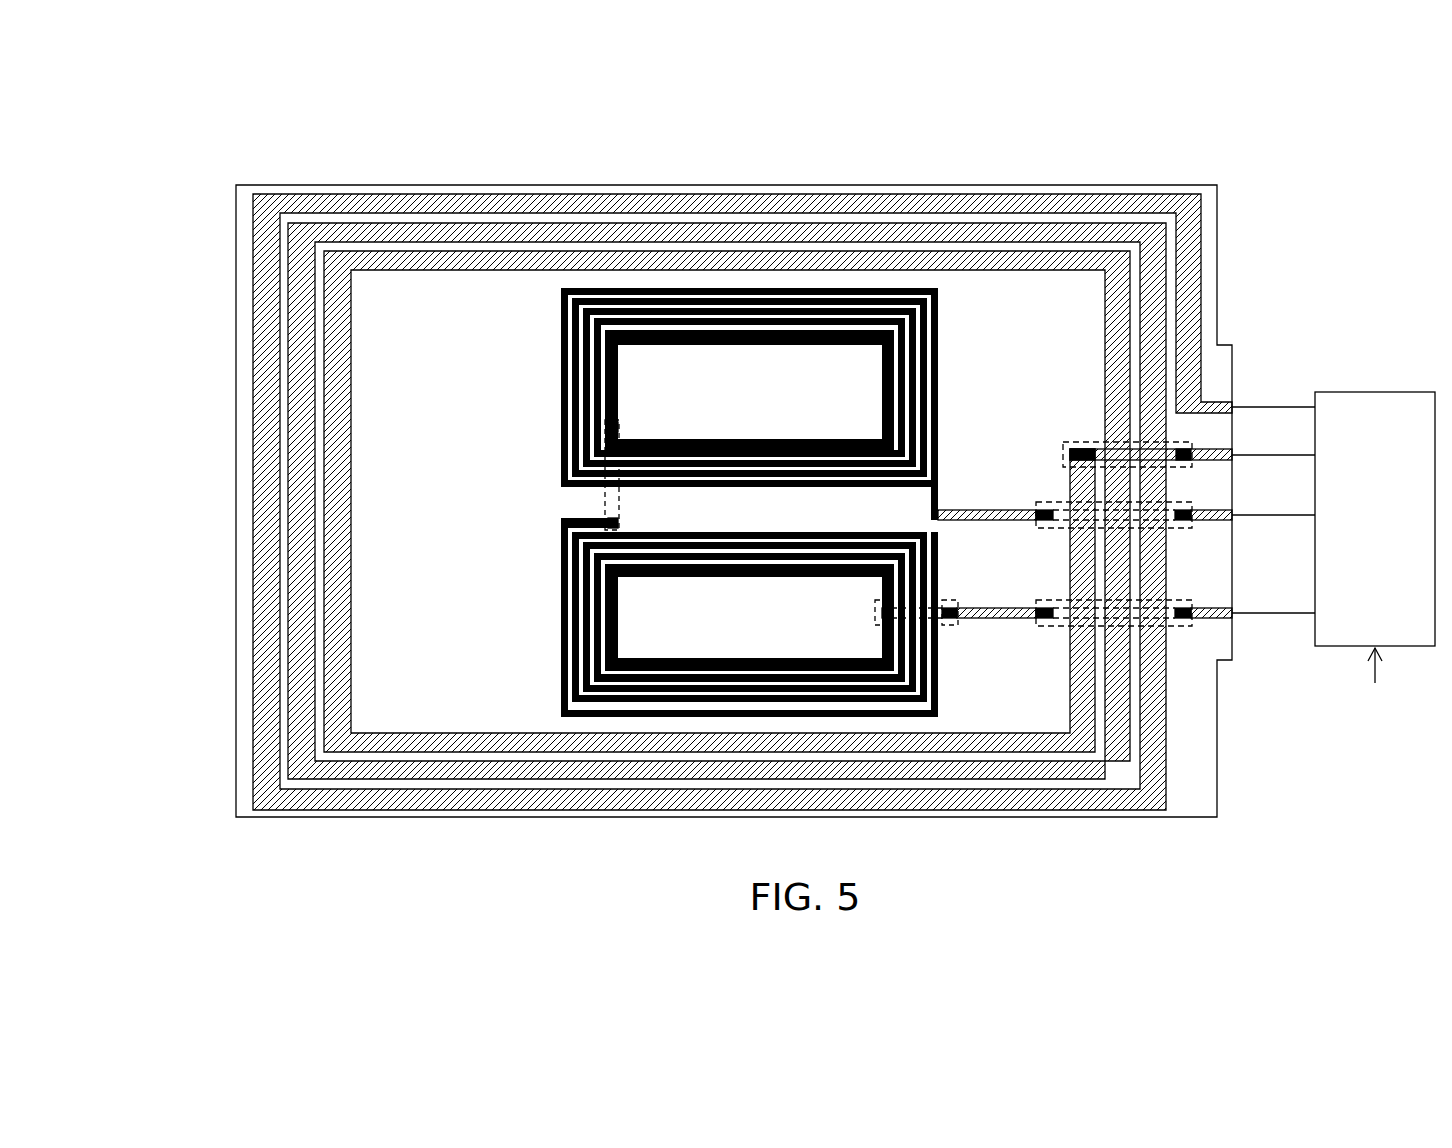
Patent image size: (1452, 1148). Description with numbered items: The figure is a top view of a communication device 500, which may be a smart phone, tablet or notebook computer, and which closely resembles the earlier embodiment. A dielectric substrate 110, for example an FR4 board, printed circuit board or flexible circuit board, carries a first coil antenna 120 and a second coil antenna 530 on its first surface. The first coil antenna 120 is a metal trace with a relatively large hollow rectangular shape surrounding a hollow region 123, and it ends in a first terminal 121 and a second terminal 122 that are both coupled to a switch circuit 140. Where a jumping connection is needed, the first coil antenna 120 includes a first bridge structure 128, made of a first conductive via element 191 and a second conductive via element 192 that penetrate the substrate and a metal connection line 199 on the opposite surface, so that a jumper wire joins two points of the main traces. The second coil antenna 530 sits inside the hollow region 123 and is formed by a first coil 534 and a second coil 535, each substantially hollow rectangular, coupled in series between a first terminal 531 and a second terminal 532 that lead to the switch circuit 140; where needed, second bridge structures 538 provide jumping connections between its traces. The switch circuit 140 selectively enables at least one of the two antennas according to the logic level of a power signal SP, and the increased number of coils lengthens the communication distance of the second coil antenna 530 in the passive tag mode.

The communication device 500 is at (235, 142).
The dielectric substrate 110 is at (235, 255).
The first coil antenna 120 is at (718, 203).
The hollow region 123 is at (995, 305).
The first terminal 121 is at (1232, 407).
The second terminal 122 is at (1232, 456).
The first bridge structure 128 is at (1077, 442).
The first conductive via element 191 is at (1083, 442).
The second conductive via element 192 is at (1185, 443).
The metal connection line 199 is at (1133, 442).
The switch circuit 140 is at (1375, 392).
The second coil antenna 530 is at (1313, 87).
The first coil 534 is at (561, 390).
The second coil 535 is at (561, 620).
The first terminal 531 is at (1232, 515).
The second terminal 532 is at (1232, 613).
The second bridge structure 538 is at (605, 498).
The power signal SP is at (1375, 685).